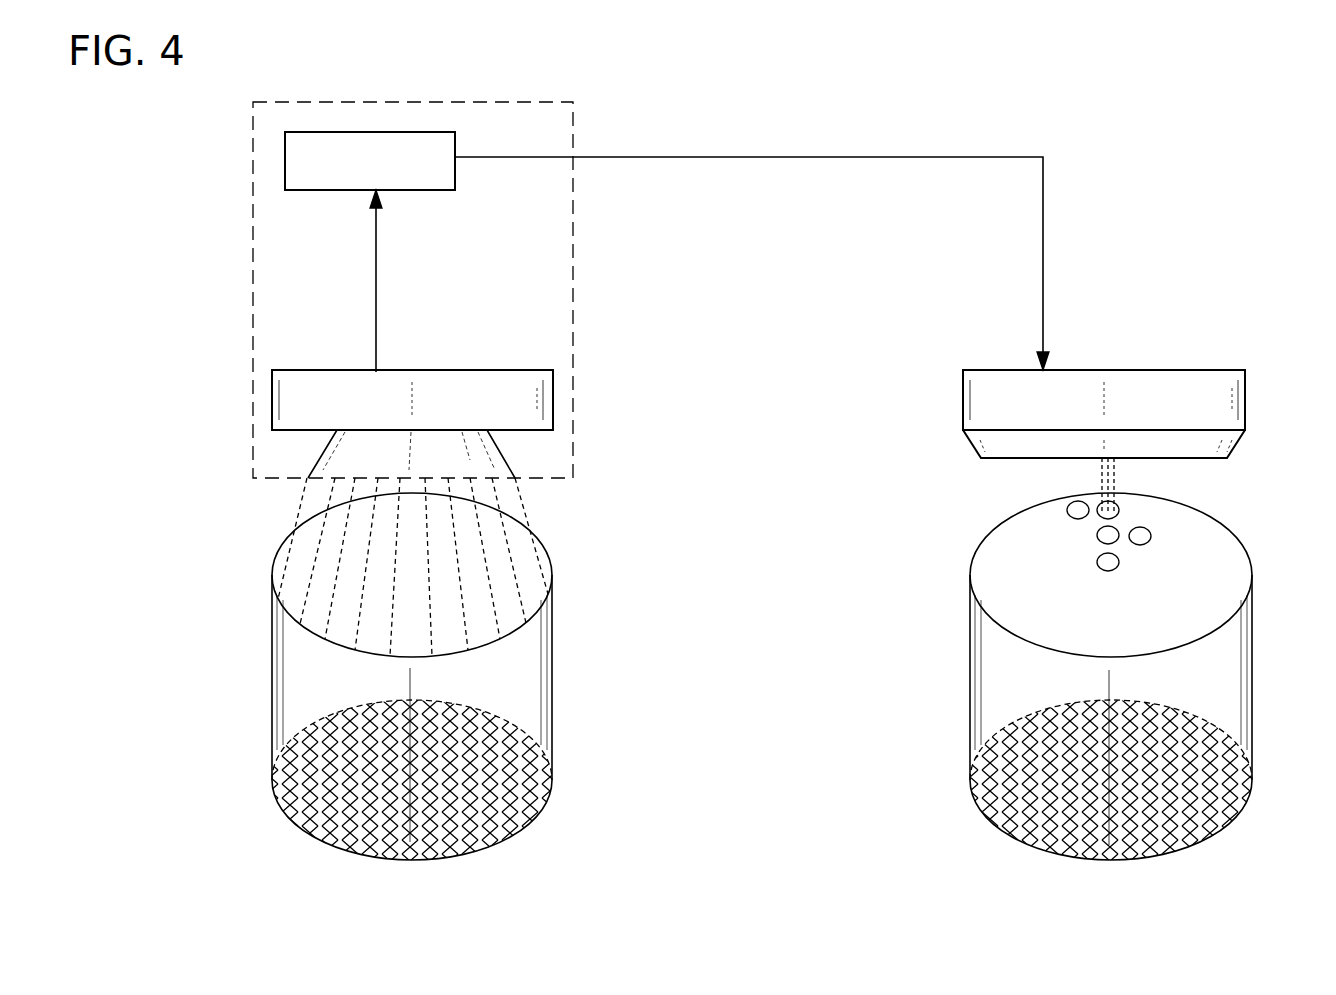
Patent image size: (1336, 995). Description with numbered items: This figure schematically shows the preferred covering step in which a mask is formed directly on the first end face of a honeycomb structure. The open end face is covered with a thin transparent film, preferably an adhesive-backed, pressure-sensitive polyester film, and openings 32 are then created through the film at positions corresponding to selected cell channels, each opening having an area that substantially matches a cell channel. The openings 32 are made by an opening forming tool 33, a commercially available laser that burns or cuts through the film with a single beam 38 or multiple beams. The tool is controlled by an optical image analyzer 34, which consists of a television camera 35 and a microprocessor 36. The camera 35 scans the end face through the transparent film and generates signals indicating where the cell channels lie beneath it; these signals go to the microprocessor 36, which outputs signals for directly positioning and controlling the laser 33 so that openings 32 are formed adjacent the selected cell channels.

The openings 32 is at (1138, 538).
The opening forming tool 33 is at (1246, 403).
The optical image analyzer 34 is at (651, 379).
The television camera 35 is at (540, 402).
The microprocessor 36 is at (455, 183).
The single beam 38 is at (1117, 476).